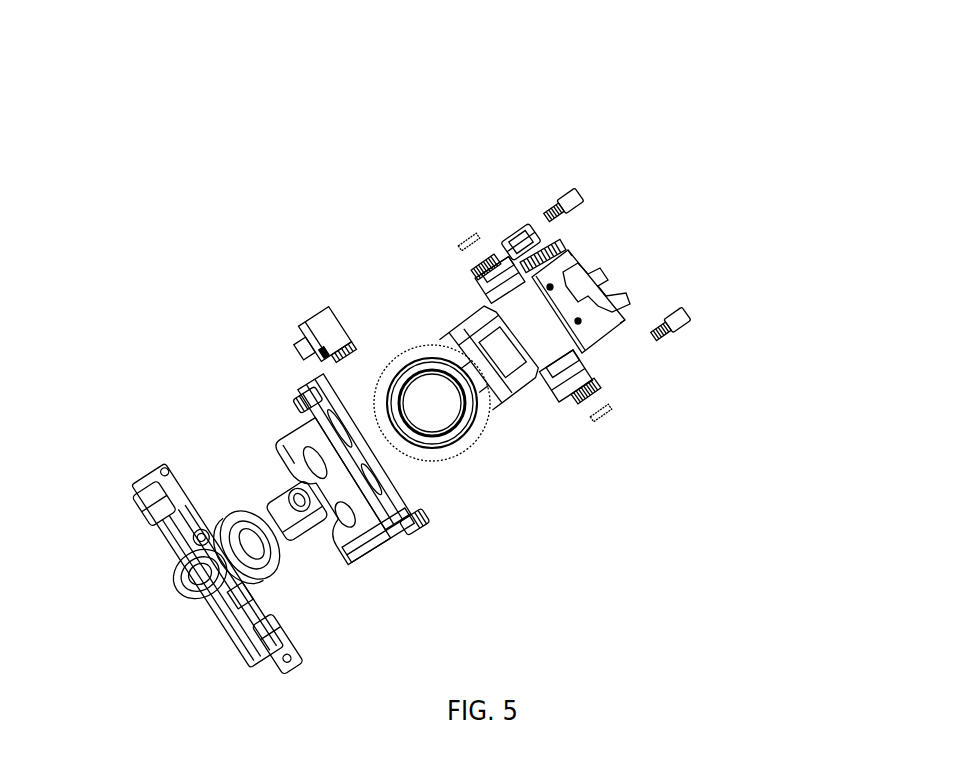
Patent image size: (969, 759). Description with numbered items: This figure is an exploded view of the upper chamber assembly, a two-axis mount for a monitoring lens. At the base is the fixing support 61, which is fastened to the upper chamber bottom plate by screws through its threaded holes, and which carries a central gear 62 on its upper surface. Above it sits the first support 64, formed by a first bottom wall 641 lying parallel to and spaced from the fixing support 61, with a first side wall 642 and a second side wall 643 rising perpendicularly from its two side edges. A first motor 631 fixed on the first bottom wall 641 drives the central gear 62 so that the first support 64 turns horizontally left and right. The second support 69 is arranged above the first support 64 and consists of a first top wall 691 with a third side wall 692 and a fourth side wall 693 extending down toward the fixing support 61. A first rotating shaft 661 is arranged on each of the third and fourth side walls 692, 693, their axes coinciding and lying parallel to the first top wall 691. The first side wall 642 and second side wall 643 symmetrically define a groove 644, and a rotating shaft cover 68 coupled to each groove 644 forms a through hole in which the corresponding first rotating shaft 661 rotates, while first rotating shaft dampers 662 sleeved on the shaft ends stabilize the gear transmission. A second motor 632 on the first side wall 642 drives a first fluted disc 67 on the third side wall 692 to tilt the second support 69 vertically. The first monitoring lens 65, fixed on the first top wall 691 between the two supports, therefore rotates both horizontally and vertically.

The fixing support 61 is at (135, 478).
The central gear 62 is at (228, 512).
The first motor 631 is at (268, 498).
The second motor 632 is at (312, 318).
The first support 64 is at (420, 523).
The first bottom wall 641 is at (289, 437).
The first side wall 642 is at (372, 507).
The second side wall 643 is at (365, 548).
The groove 644 is at (318, 404).
The first monitoring lens 65 is at (402, 368).
The first rotating shaft 661 is at (468, 262).
The first rotating shaft damper 662 is at (457, 236).
The first fluted disc 67 is at (516, 233).
The rotating shaft cover 68 is at (553, 193).
The second support 69 is at (661, 262).
The first top wall 691 is at (578, 302).
The third side wall 692 is at (522, 282).
The fourth side wall 693 is at (592, 345).